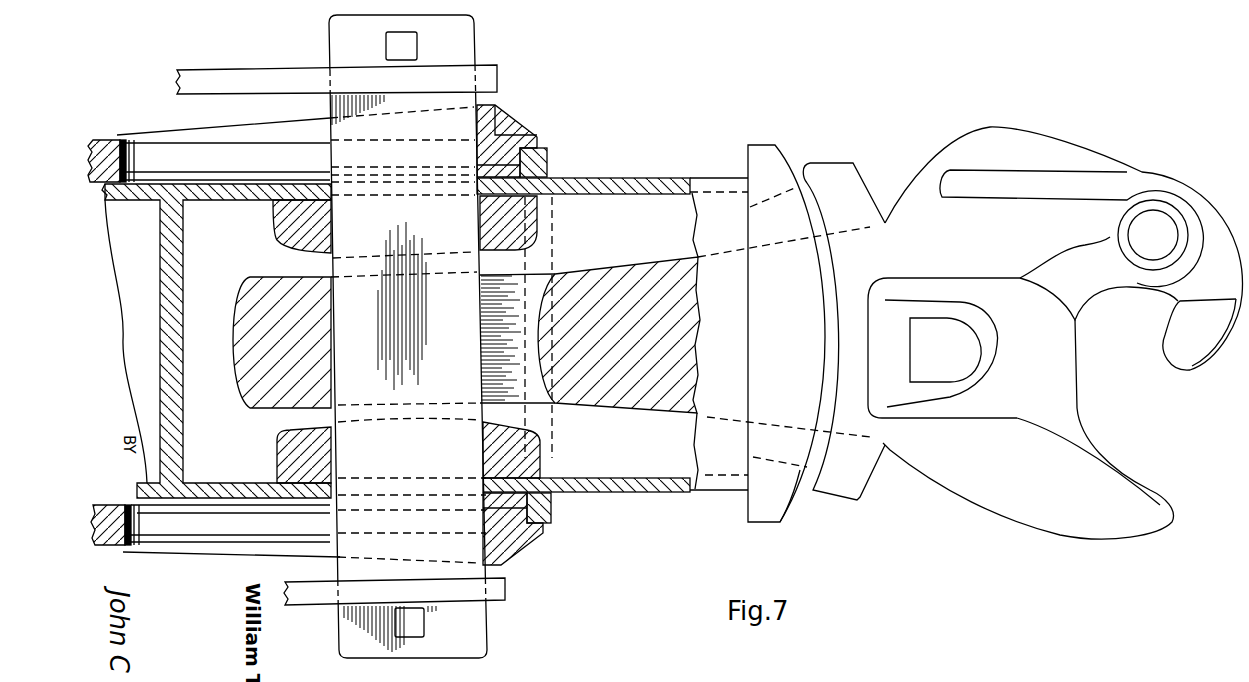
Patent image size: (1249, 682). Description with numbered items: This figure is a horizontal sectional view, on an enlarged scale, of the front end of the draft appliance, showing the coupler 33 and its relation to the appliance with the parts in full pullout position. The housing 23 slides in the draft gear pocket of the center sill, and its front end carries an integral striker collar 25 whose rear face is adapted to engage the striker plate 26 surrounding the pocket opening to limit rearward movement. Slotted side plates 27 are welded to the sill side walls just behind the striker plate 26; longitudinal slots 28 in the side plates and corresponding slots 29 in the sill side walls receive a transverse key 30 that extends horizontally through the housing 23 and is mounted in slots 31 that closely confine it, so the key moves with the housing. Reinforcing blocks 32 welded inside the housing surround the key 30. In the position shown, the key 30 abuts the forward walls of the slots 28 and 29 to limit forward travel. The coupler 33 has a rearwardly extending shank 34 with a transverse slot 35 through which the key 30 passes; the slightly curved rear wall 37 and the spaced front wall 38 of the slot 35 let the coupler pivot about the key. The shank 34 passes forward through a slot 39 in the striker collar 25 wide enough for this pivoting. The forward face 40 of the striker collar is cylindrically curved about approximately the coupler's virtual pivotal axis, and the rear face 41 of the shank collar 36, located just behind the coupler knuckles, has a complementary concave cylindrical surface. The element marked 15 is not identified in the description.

The housing 15 is at (160, 327).
The housing 23 is at (599, 493).
The striker collar 25 is at (775, 522).
The striker plate 26 is at (548, 154).
The slotted side plates 27 is at (107, 141).
The longitudinal slots 28 is at (172, 533).
The slots 29 is at (213, 513).
The transverse key 30 is at (462, 655).
The slots 31 is at (484, 485).
The reinforcing blocks 32 is at (280, 229).
The coupler 33 is at (1068, 140).
The shank 34 is at (631, 409).
The transverse slot 35 is at (547, 274).
The shank collar 36 is at (840, 494).
The rear wall 37 is at (323, 287).
The front wall 38 is at (549, 365).
The slot 39 is at (768, 218).
The forward face 40 is at (787, 507).
The rear face 41 is at (804, 182).